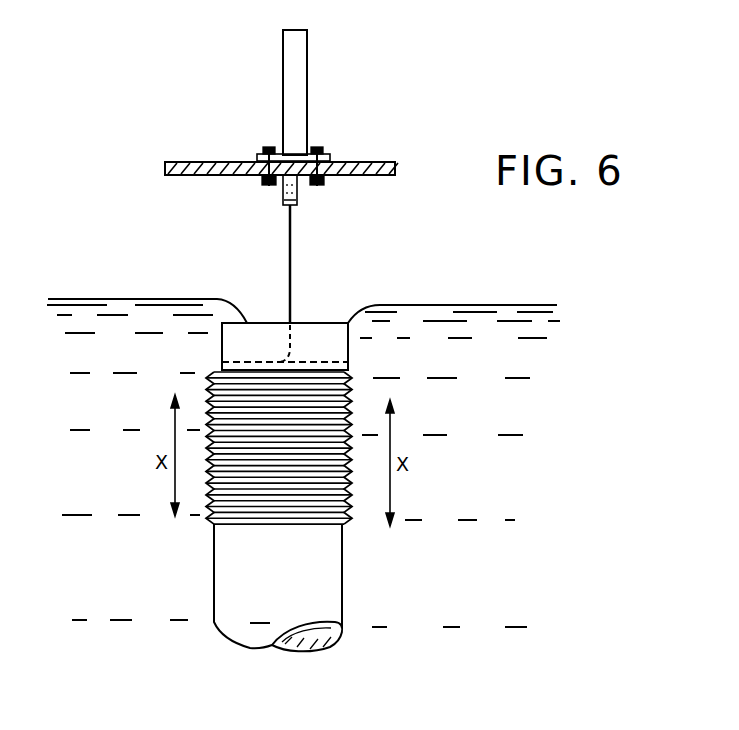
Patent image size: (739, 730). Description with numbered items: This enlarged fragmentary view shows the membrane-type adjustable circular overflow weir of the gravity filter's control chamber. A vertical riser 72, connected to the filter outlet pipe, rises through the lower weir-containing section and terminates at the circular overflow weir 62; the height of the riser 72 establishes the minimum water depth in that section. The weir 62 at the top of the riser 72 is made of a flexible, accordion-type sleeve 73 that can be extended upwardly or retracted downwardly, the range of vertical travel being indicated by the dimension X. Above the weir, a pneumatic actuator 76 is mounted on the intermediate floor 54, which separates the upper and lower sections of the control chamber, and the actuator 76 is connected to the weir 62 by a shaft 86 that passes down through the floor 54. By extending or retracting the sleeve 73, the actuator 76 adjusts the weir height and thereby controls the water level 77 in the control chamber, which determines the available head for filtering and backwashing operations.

The intermediate floor 54 is at (229, 160).
The pneumatic actuator 76 is at (300, 101).
The shaft 86 is at (293, 243).
The water level 77 is at (150, 298).
The circular overflow weir 62 is at (332, 362).
The accordion-type sleeve 73 is at (232, 418).
The vertical riser 72 is at (318, 583).